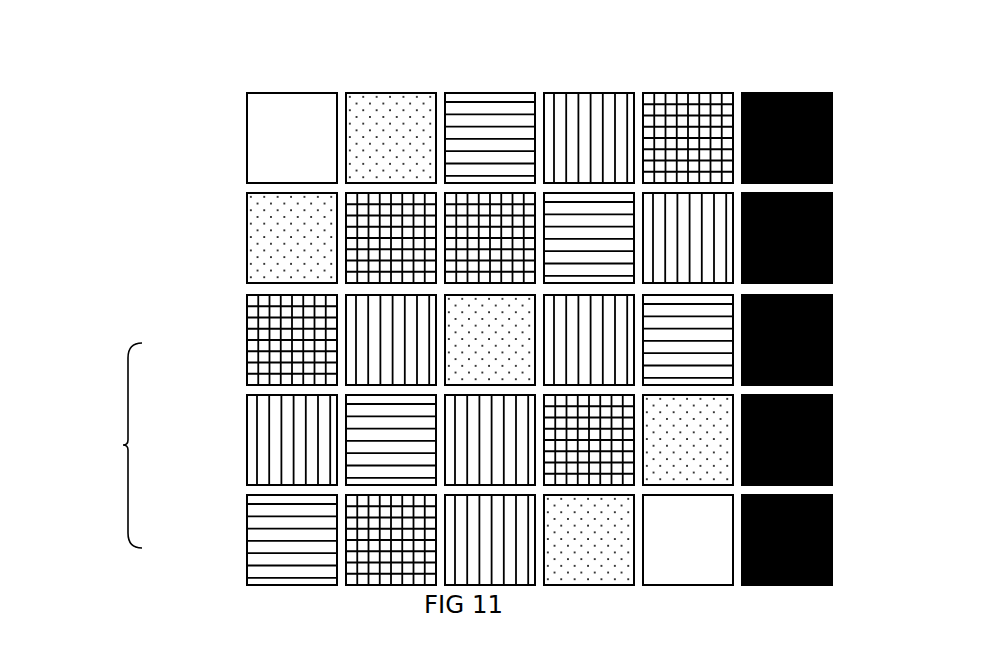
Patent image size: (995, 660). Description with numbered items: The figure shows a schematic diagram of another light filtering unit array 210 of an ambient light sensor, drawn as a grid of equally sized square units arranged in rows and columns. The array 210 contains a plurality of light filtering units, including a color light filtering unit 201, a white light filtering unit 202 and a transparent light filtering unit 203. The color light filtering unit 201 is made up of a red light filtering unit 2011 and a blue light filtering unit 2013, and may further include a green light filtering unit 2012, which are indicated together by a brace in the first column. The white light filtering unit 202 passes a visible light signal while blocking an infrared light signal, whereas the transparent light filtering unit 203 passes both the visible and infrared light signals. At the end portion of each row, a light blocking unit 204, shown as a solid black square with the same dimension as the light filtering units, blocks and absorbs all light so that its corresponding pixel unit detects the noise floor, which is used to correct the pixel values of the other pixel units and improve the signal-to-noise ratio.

The light filtering unit array 210 is at (286, 66).
The color light filtering unit 201 is at (123, 445).
The red light filtering unit 2011 is at (265, 348).
The green light filtering unit 2012 is at (265, 548).
The blue light filtering unit 2013 is at (265, 448).
The white light filtering unit 202 is at (268, 250).
The transparent light filtering unit 203 is at (275, 138).
The light blocking unit 204 is at (832, 145).